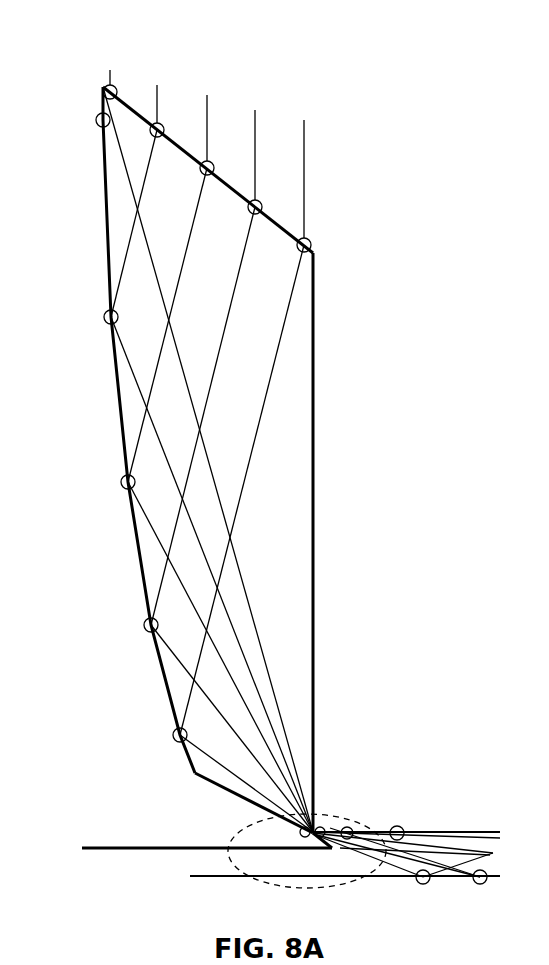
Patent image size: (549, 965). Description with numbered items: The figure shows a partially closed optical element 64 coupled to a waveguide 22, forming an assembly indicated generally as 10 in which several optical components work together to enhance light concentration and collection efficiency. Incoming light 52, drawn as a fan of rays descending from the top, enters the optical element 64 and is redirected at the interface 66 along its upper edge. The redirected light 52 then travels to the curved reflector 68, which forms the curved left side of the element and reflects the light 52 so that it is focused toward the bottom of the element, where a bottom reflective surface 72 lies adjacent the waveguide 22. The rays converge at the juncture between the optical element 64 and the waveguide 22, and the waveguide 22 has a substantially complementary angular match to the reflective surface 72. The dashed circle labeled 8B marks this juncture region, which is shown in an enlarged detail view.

The deployable structure 10 is at (110, 48).
The waveguide 22 is at (402, 860).
The light 52 is at (174, 302).
The partially closed optical element 64 is at (315, 352).
The interface 66 is at (182, 157).
The curved reflector 68 is at (113, 360).
The bottom reflective surface 72 is at (217, 786).
The enlarged view region 8B is at (321, 813).